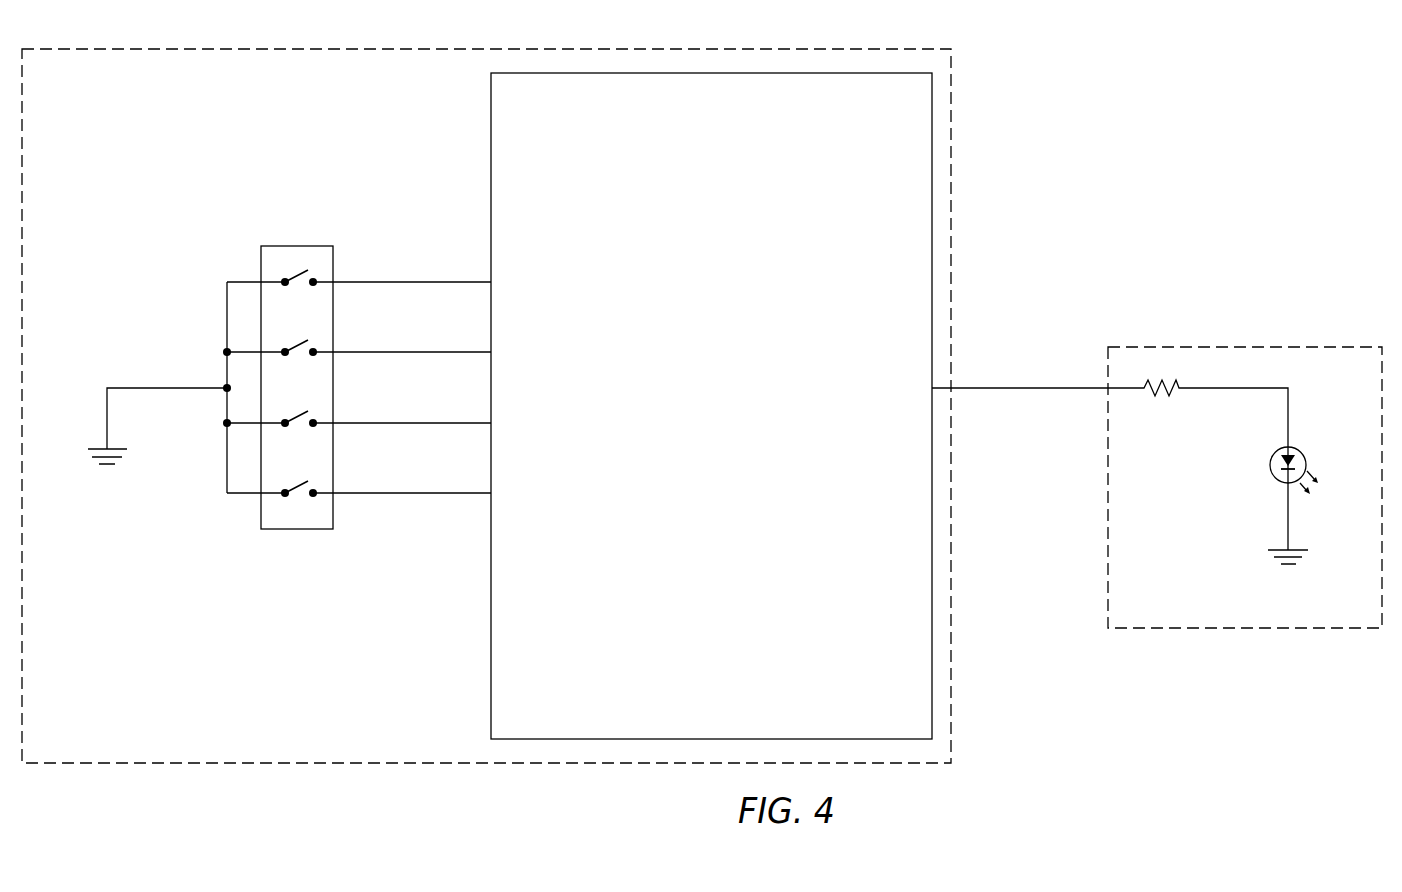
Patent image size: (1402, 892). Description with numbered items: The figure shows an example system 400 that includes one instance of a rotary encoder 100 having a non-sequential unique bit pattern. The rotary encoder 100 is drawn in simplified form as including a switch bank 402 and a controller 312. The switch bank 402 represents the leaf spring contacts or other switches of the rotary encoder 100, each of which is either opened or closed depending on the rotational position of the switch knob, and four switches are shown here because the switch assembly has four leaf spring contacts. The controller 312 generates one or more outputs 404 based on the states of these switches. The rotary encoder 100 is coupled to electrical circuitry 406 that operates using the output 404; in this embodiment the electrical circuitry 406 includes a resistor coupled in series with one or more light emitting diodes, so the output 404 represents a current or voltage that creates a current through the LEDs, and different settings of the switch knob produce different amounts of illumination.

The rotary encoder 100 is at (955, 203).
The controller 312 is at (484, 651).
The system 400 is at (1208, 122).
The switch bank 402 is at (274, 218).
The output 404 is at (1007, 402).
The electrical circuitry 406 is at (1230, 338).